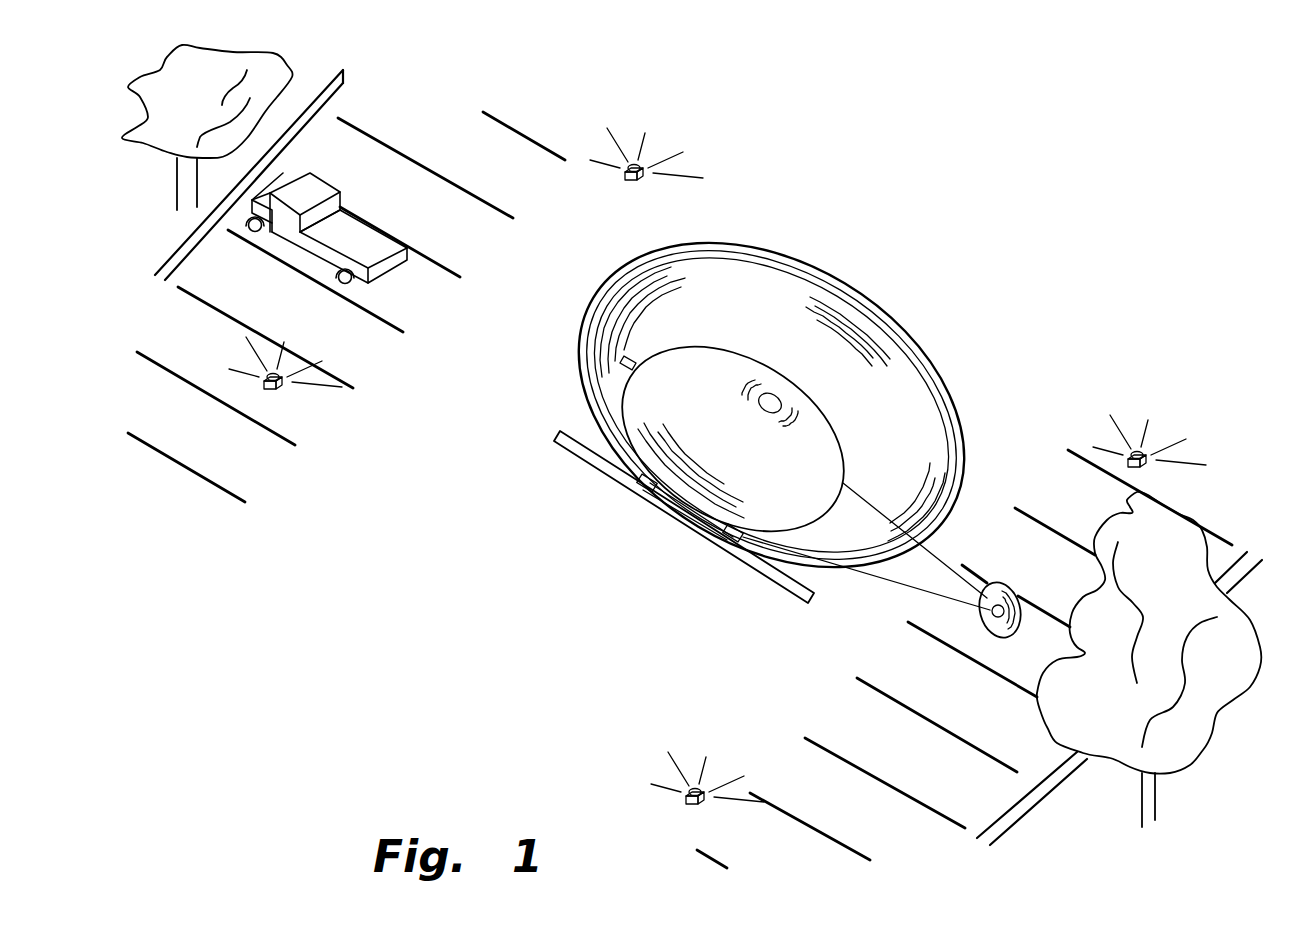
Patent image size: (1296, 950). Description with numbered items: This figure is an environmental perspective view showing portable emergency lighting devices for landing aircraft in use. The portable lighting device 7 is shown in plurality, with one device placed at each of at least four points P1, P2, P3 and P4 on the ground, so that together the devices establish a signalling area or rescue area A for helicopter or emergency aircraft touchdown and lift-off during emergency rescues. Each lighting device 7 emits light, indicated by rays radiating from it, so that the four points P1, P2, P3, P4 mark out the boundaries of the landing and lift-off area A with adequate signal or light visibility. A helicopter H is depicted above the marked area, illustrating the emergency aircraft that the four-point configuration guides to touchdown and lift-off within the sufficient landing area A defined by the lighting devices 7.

The portable lighting device 7 is at (670, 141).
The rescue area A is at (730, 632).
The horizontal support bar H is at (684, 517).
The first signalling point P1 is at (633, 222).
The second signalling point P2 is at (1215, 507).
The third signalling point P3 is at (738, 850).
The fourth signalling point P4 is at (321, 439).